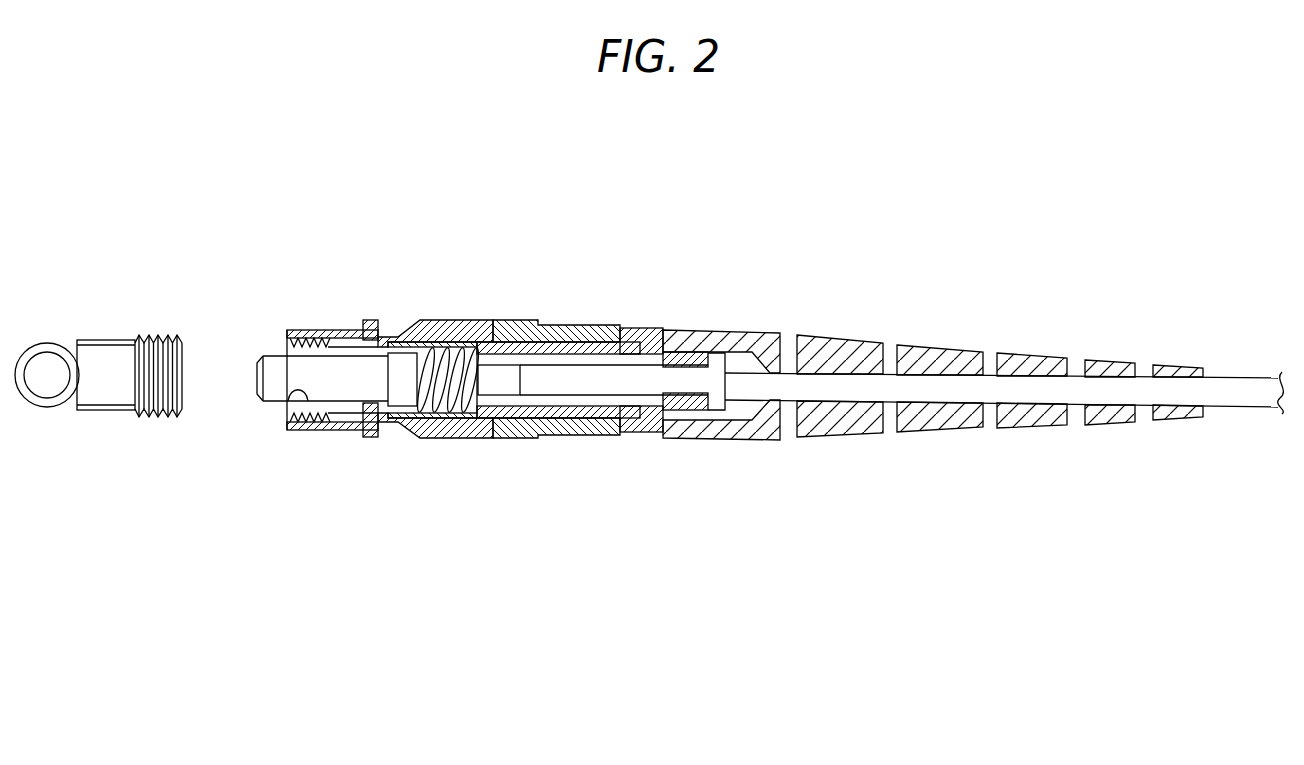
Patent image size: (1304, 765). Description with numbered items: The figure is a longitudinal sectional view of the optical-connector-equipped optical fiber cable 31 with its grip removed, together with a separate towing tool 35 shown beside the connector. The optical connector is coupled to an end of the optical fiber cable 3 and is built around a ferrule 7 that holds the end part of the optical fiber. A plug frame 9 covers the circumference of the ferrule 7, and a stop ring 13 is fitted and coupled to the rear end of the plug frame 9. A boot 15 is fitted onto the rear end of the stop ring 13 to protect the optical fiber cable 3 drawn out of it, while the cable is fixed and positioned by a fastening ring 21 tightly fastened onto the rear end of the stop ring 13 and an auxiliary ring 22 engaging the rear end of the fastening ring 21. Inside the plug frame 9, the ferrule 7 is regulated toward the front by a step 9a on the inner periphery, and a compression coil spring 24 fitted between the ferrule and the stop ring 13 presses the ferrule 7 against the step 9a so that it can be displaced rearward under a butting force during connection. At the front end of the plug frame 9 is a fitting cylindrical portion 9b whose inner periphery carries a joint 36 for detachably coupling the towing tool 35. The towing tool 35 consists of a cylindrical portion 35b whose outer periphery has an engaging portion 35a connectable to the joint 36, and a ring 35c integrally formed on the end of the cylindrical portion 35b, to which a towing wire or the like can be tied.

The optical fiber cable 3 is at (1256, 398).
The ferrule 7 is at (270, 390).
The plug frame 9 is at (390, 393).
The step 9a is at (373, 350).
The fitting cylindrical portion 9b is at (315, 428).
The stop ring 13 is at (618, 430).
The boot 15 is at (855, 417).
The fastening ring 21 is at (655, 423).
The auxiliary ring 22 is at (697, 423).
The compression coil spring 24 is at (468, 440).
The optical-connector-equipped optical fiber cable 31 is at (933, 379).
The towing tool 35 is at (102, 369).
The engaging portion 35a is at (165, 333).
The cylindrical portion 35b is at (108, 411).
The ring 35c is at (33, 408).
The joint 36 is at (288, 401).